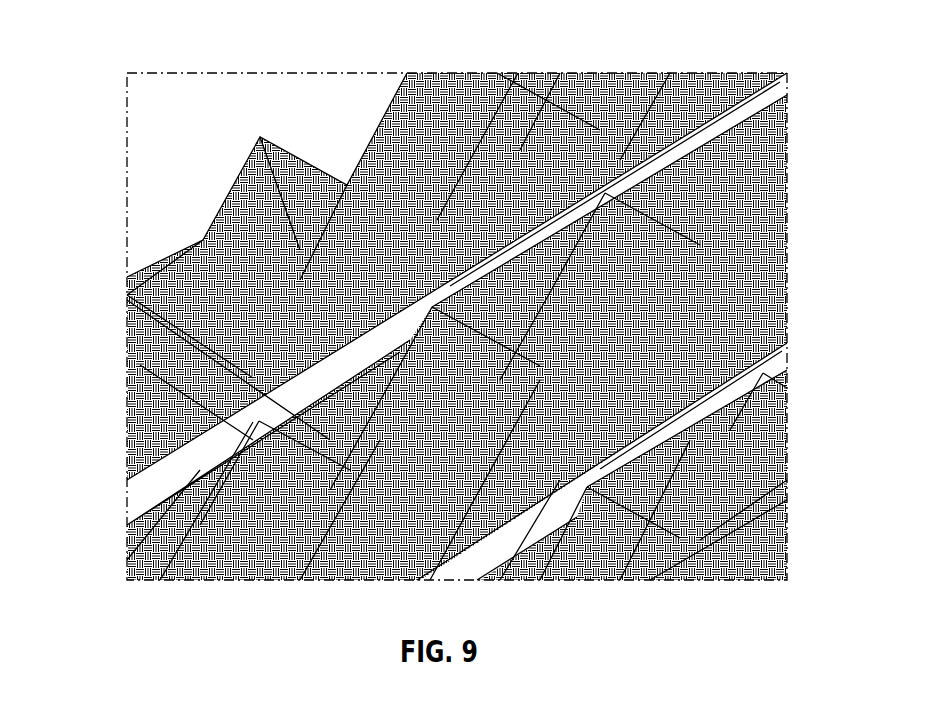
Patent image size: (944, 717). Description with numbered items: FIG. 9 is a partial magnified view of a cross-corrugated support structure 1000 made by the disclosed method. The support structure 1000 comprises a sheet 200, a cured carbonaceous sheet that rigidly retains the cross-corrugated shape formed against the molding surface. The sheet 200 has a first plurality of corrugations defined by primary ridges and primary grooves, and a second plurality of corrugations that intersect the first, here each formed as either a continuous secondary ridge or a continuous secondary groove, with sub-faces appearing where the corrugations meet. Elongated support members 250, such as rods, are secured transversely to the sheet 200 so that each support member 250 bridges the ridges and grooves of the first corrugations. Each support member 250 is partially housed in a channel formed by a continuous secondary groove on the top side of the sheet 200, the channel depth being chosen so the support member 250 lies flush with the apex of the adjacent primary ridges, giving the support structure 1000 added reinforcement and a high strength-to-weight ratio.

The cross-corrugated support structure 1000 is at (150, 40).
The sheet 200 is at (247, 153).
The support member 250 is at (778, 72).